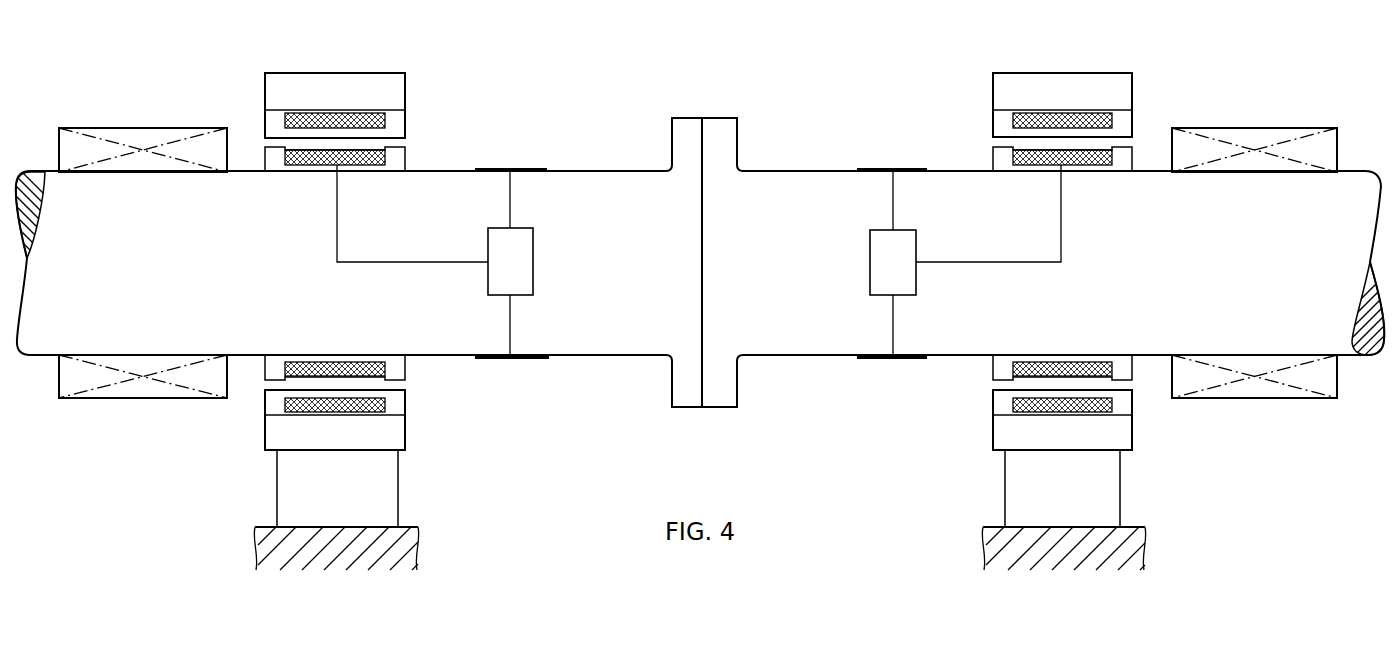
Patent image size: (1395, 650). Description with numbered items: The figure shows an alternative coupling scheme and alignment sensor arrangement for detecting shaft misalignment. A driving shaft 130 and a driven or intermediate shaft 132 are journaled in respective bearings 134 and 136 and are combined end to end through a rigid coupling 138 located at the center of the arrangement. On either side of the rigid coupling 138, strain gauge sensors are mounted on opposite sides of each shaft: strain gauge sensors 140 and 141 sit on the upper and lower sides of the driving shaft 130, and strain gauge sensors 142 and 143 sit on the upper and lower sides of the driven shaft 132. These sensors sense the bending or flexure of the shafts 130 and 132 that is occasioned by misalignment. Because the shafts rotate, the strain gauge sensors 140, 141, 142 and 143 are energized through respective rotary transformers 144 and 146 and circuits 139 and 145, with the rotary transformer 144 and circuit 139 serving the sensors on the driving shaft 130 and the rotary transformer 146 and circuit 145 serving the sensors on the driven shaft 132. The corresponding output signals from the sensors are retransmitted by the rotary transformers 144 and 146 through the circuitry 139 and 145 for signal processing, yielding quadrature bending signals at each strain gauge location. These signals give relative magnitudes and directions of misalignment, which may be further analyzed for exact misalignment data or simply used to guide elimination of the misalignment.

The driving shaft 130 is at (42, 172).
The driven or intermediate shaft 132 is at (1358, 170).
The bearing 134 is at (147, 362).
The bearing 136 is at (1252, 360).
The rigid coupling 138 is at (713, 117).
The circuit 139 is at (523, 250).
The strain gauge sensor 140 is at (488, 168).
The strain gauge sensor 141 is at (530, 360).
The strain gauge sensor 142 is at (868, 168).
The strain gauge sensor 143 is at (910, 360).
The rotary transformer 144 is at (316, 73).
The circuit 145 is at (878, 245).
The rotary transformer 146 is at (1040, 73).